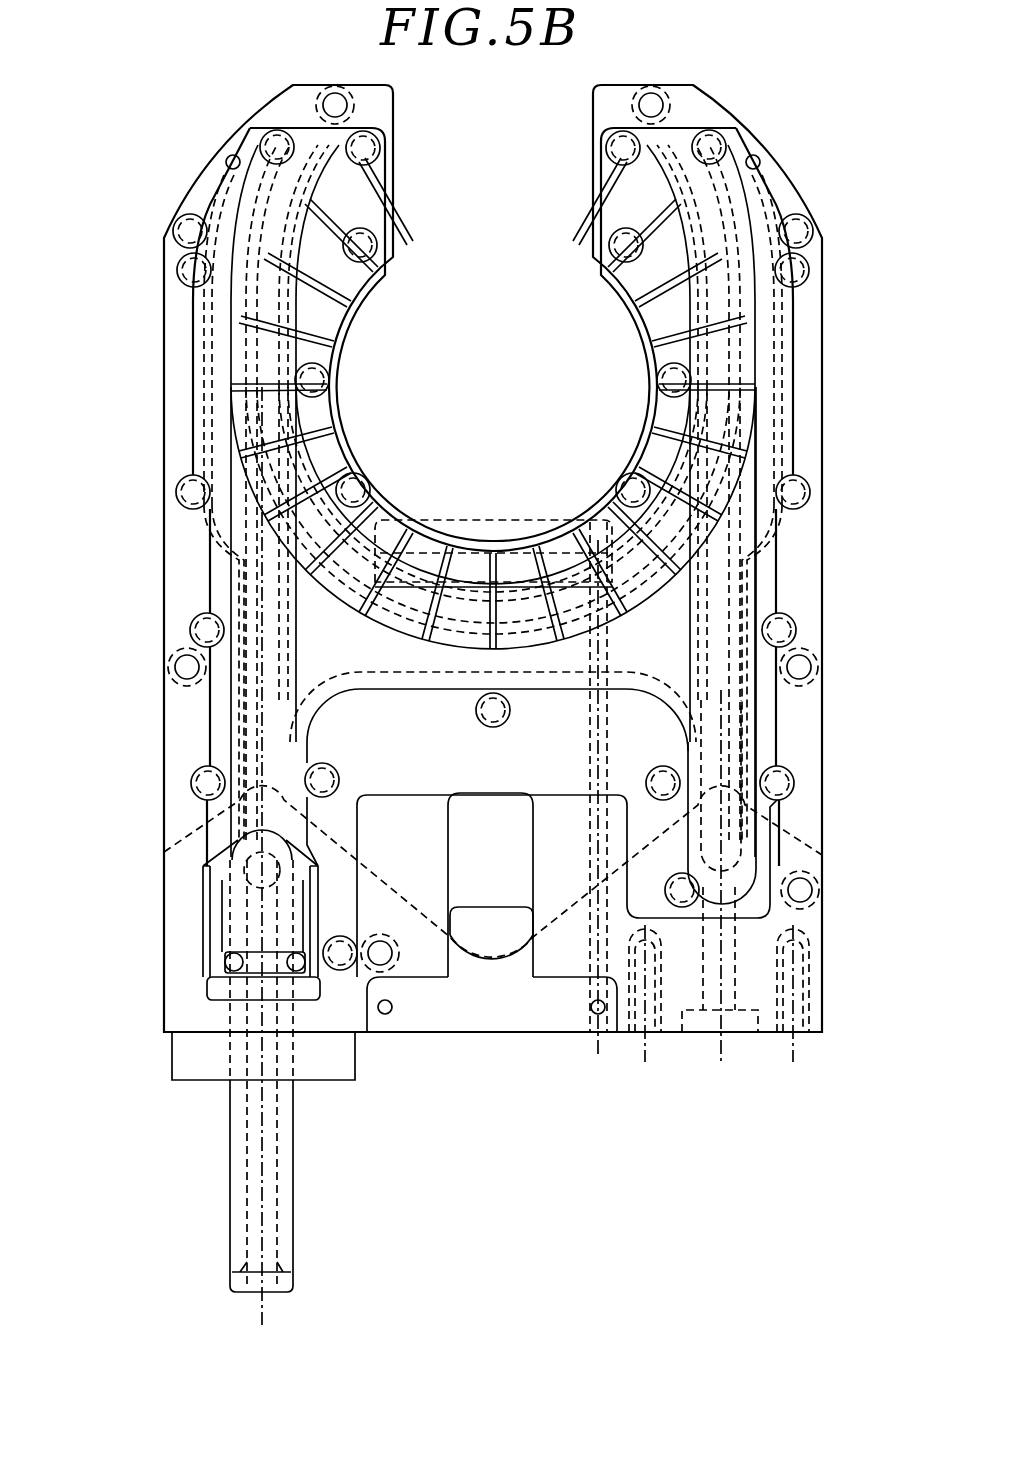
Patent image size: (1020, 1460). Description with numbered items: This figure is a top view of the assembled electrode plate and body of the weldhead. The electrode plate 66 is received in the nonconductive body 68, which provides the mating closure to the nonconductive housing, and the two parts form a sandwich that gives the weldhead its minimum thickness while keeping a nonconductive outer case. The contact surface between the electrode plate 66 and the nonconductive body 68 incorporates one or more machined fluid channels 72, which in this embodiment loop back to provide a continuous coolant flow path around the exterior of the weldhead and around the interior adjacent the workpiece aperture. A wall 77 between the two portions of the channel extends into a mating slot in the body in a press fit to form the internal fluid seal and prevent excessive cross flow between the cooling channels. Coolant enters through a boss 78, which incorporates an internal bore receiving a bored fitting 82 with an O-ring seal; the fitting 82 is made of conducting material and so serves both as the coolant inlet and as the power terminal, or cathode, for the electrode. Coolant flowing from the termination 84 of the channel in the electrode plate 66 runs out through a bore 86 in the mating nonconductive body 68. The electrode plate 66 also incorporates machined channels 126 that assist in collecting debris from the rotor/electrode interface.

The electrode plate 66 is at (762, 186).
The nonconductive body 68 is at (822, 375).
The fluid channels 72 is at (252, 258).
The wall 77 is at (300, 205).
The boss 78 is at (208, 925).
The bored fitting 82 is at (231, 1178).
The termination 84 is at (722, 822).
The bore 86 is at (721, 1033).
The machined channels 126 is at (295, 305).